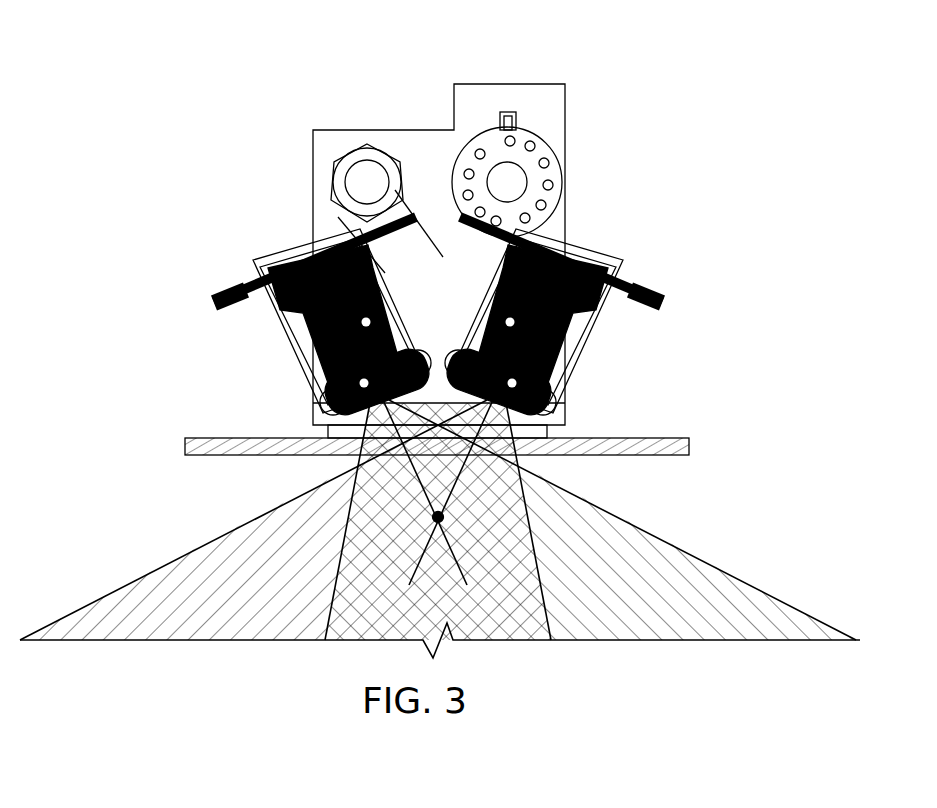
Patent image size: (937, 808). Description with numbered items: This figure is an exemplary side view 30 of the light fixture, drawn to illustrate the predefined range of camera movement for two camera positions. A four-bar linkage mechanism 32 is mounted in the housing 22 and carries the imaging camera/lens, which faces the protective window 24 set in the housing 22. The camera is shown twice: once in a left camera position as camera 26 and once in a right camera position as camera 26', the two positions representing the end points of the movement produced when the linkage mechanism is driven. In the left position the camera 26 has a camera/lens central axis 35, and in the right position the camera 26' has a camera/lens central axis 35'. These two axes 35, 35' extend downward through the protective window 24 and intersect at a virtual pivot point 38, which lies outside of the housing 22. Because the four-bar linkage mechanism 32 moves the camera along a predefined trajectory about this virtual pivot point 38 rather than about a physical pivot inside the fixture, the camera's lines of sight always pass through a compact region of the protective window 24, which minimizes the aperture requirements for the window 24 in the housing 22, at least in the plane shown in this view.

The side view 30 is at (266, 55).
The four-bar linkage mechanism 32 is at (403, 90).
The camera 26 is at (324, 318).
The camera 26' is at (554, 318).
The protective window 24 is at (563, 431).
The housing 22 is at (670, 456).
The camera/lens central axis 35 is at (592, 522).
The camera/lens central axis 35' is at (283, 522).
The virtual pivot point 38 is at (444, 516).